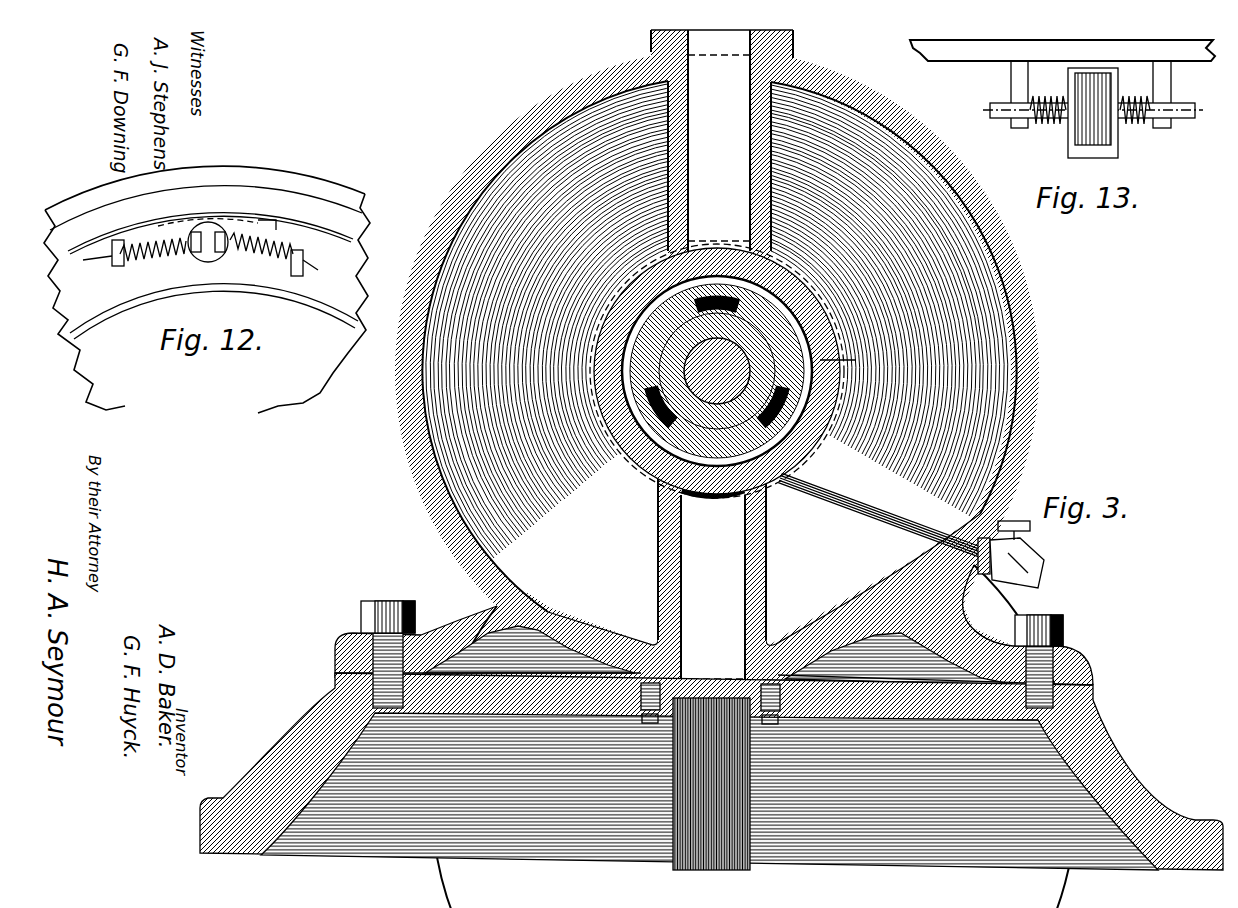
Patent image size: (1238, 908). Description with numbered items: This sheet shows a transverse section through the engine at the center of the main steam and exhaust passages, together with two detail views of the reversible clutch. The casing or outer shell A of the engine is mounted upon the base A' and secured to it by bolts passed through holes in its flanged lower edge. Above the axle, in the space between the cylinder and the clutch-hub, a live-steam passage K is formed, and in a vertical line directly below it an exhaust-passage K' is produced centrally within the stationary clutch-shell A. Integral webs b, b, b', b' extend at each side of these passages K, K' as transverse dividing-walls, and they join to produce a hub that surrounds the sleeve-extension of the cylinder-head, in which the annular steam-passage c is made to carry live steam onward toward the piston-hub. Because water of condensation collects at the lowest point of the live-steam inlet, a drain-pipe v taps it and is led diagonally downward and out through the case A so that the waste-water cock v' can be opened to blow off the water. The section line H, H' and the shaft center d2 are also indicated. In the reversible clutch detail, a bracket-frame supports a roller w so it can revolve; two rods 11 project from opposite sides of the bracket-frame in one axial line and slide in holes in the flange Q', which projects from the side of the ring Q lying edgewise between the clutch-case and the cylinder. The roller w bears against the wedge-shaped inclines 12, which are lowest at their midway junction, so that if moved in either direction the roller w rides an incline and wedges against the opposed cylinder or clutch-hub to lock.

In FIG. 3, the casing or outer shell A is at (714, 478).
In FIG. 3, the base A' is at (711, 735).
In FIG. 3, the integral webs b is at (717, 319).
In FIG. 3, the integral webs b' is at (764, 579).
In FIG. 3, the annular steam-passage c is at (712, 288).
In FIG. 3, the shaft d2 is at (717, 371).
In FIG. 3, the section line H is at (699, 371).
In FIG. 3, the section line H' is at (848, 360).
In FIG. 3, the live-steam passage K is at (747, 242).
In FIG. 3, the exhaust-passage K' is at (712, 579).
In FIG. 3, the rod v is at (881, 515).
In FIG. 3, the valve v' is at (1014, 554).
In FIG. 12, the ring Q is at (207, 289).
In FIG. 12, the flange Q' is at (216, 259).
In FIG. 12, the rods 11 is at (198, 254).
In FIG. 12, the wedge-shaped inclines 12 is at (262, 214).
In FIG. 12, the roller w is at (198, 265).
In FIG. 13, the roller w is at (1062, 99).